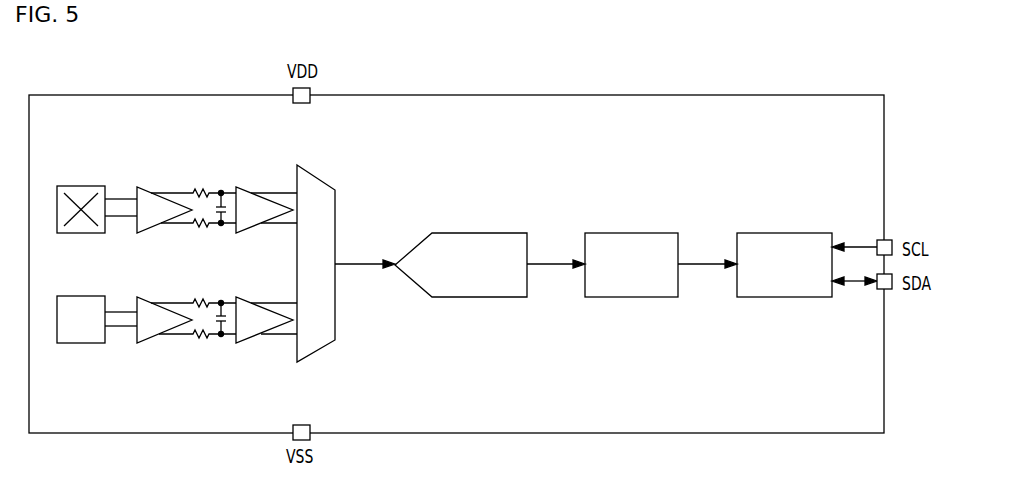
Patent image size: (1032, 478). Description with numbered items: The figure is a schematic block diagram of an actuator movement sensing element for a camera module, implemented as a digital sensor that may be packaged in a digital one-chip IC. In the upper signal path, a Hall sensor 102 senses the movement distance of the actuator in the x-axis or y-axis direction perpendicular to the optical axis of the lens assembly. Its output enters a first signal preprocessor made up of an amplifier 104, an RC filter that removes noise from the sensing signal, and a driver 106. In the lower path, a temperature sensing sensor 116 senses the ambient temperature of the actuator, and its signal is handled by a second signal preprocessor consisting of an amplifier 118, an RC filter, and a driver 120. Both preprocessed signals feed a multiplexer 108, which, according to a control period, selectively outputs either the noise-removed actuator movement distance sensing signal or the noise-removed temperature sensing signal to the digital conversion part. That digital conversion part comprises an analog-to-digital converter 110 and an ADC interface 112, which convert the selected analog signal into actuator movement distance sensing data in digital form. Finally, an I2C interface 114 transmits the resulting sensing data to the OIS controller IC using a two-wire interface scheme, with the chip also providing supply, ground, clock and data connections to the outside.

The Hall sensor 102 is at (80, 186).
The amplifier 104 is at (145, 187).
The driver 106 is at (249, 190).
The multiplexer 108 is at (320, 180).
The analog-to-digital converter 110 is at (518, 338).
The ADC interface 112 is at (672, 338).
The interface 114 is at (823, 338).
The temperature sensing sensor 116 is at (82, 343).
The amplifier 118 is at (143, 343).
The driver 120 is at (247, 343).